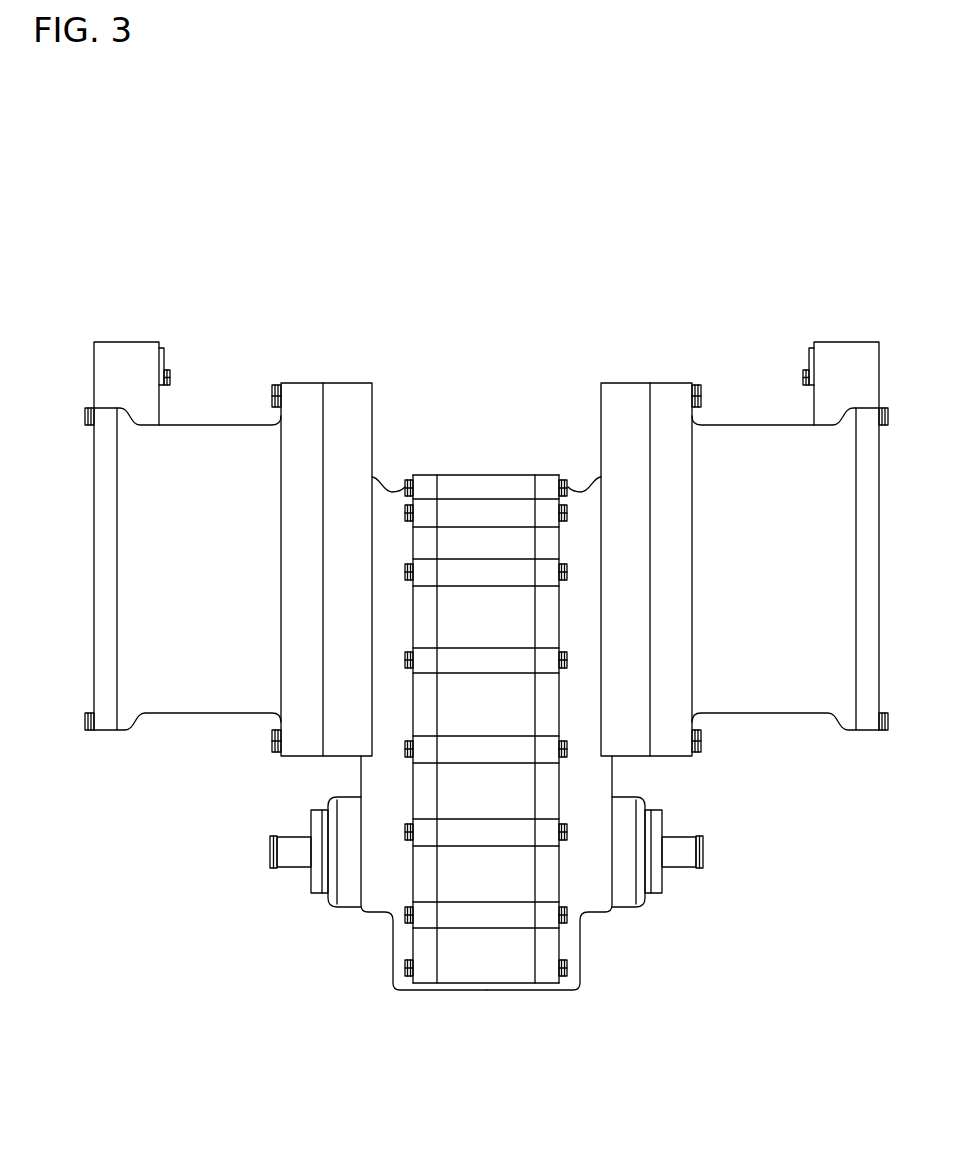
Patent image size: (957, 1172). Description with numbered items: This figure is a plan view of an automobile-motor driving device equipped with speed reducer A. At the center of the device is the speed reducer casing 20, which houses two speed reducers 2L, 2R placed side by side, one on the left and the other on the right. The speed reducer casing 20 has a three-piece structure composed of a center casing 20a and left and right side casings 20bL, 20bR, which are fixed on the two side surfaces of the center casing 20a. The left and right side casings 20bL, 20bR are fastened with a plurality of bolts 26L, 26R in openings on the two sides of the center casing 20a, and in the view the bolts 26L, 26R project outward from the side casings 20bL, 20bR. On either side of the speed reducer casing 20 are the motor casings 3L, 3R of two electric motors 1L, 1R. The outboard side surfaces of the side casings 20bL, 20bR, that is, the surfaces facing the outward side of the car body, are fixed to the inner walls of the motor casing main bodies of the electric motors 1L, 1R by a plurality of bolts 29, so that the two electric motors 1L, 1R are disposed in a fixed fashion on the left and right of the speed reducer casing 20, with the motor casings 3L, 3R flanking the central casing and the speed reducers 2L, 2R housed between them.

The speed reducer A is at (313, 337).
The left electric motor 1L is at (138, 663).
The right electric motor 1R is at (845, 688).
The left motor casing 3L is at (203, 663).
The right motor casing 3R is at (770, 668).
The bolts 29 is at (272, 752).
The left bolts 26L is at (405, 828).
The right bolts 26R is at (567, 755).
The left speed reducer 2L is at (373, 913).
The right speed reducer 2R is at (592, 917).
The speed reducer casing 20 is at (472, 808).
The left side casing 20bL is at (403, 935).
The center casing 20a is at (490, 940).
The right side casing 20bR is at (570, 947).